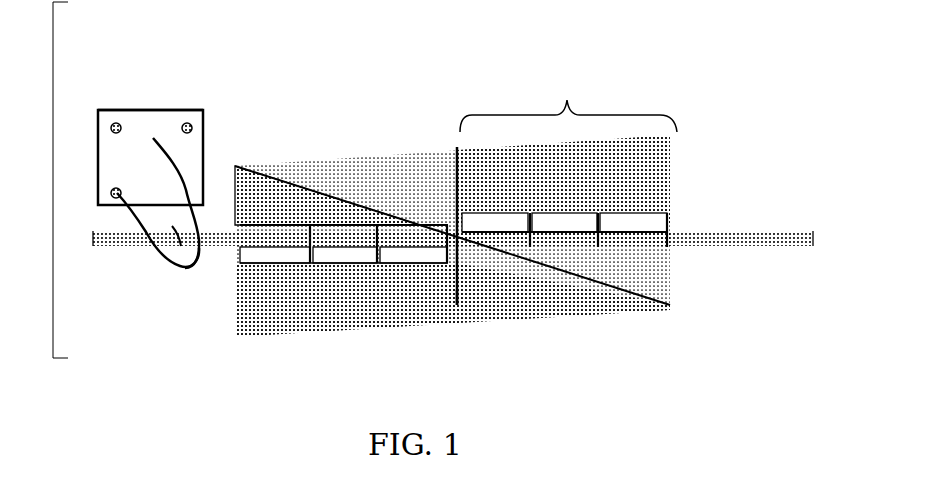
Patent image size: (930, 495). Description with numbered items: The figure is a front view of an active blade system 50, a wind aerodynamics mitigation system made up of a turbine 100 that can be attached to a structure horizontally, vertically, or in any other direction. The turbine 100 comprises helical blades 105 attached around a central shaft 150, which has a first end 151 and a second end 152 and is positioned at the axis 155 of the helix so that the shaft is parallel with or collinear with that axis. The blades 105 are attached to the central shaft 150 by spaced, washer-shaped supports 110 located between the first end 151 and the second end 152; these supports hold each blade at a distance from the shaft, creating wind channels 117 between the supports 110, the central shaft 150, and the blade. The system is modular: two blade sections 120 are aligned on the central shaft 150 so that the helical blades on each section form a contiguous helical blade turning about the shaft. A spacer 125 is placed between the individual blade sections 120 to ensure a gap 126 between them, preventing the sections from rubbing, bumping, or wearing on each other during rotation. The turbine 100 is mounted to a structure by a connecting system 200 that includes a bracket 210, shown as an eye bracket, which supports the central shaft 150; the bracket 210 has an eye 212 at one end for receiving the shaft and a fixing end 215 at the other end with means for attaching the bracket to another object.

The active blade system 50 is at (53, 181).
The turbine 100 is at (322, 79).
The blade 105 is at (255, 198).
The support 110 is at (303, 252).
The wind channel 117 is at (570, 218).
The blade section 120 is at (456, 209).
The spacer 125 is at (450, 197).
The gap 126 is at (455, 305).
The central shaft 150 is at (133, 233).
The first end 151 is at (97, 233).
The second end 152 is at (812, 241).
The axis 155 is at (686, 247).
The connecting system 200 is at (189, 68).
The bracket 210 is at (147, 109).
The eye 212 is at (193, 250).
The fixing end 215 is at (107, 157).